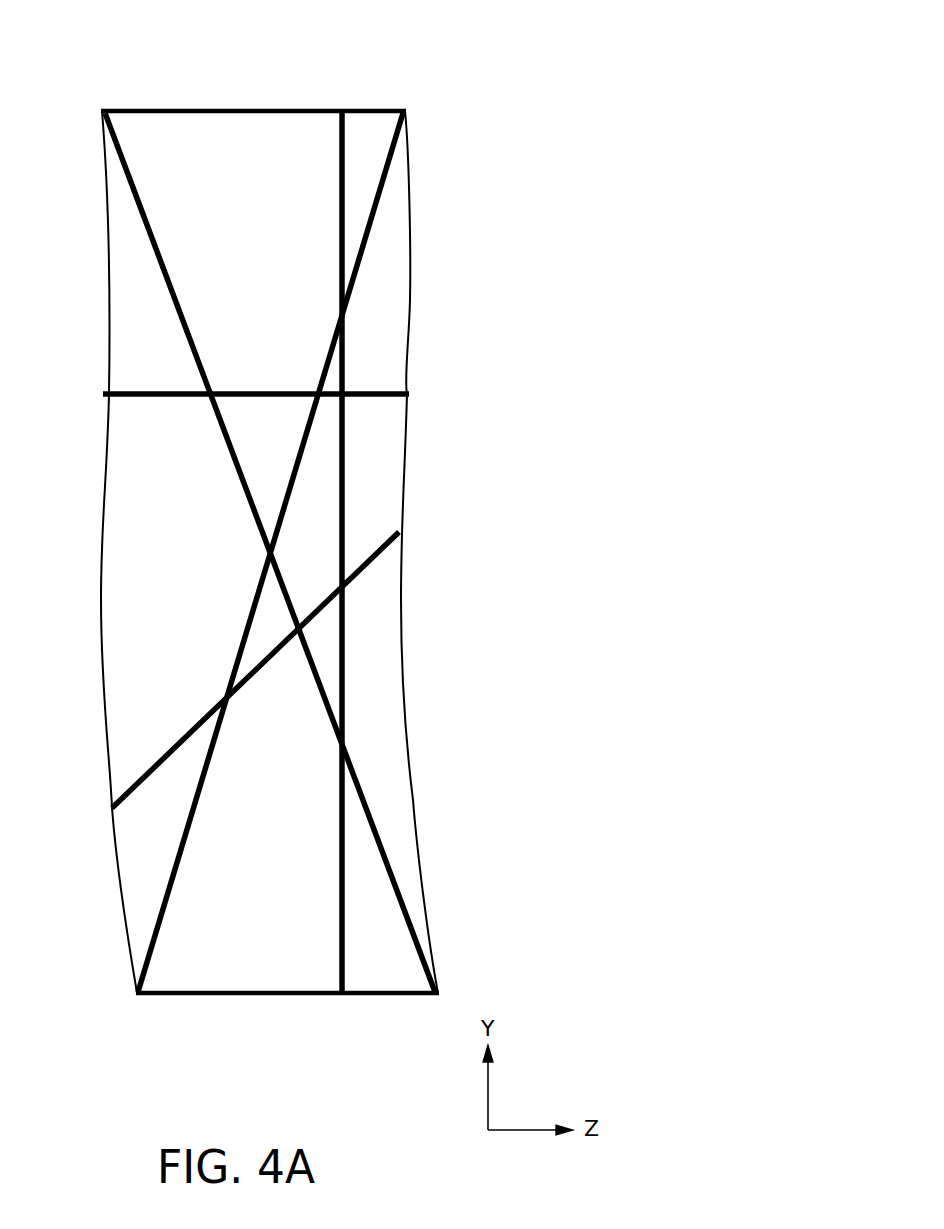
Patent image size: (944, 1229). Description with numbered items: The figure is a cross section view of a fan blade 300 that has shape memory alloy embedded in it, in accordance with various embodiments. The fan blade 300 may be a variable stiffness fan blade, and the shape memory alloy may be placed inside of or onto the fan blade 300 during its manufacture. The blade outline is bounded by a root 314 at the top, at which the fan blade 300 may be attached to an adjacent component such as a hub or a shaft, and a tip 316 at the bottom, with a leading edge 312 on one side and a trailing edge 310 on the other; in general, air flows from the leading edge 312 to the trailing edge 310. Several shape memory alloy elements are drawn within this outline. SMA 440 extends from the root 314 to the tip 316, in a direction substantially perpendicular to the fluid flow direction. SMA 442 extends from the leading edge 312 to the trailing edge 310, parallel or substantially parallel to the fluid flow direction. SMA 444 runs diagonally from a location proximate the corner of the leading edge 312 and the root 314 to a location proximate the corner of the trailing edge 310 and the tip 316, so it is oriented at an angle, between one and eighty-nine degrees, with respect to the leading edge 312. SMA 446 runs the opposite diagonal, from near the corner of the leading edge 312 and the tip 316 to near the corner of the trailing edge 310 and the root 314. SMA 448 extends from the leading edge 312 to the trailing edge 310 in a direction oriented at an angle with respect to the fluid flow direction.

The fan blade 300 is at (445, 67).
The trailing edge 310 is at (403, 548).
The leading edge 312 is at (100, 548).
The root 314 is at (246, 110).
The tip 316 is at (285, 994).
The SMA 440 is at (337, 143).
The SMA 442 is at (133, 397).
The SMA 444 is at (142, 197).
The SMA 446 is at (379, 205).
The SMA 448 is at (153, 760).